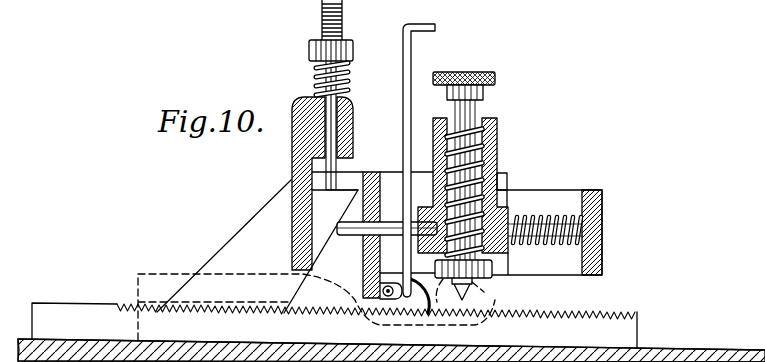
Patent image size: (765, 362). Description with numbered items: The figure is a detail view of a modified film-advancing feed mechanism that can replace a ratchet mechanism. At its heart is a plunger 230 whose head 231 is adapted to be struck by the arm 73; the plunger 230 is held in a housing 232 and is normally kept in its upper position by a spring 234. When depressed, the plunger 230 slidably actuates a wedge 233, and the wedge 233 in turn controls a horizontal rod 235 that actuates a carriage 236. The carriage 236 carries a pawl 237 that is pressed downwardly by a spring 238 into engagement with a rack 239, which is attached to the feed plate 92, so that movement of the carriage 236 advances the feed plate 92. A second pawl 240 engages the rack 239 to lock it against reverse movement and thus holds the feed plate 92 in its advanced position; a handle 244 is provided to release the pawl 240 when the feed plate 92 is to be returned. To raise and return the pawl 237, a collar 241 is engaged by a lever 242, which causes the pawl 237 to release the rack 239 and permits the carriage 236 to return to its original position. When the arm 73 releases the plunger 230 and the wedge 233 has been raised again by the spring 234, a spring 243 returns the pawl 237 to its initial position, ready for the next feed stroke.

The arm 73 is at (325, 95).
The head 231 is at (311, 47).
The spring 234 is at (346, 81).
The plunger 230 is at (351, 118).
The housing 232 is at (290, 156).
The wedge 233 is at (315, 229).
The horizontal rod 235 is at (350, 238).
The handle 244 is at (428, 18).
The spring 238 is at (496, 140).
The carriage 236 is at (493, 162).
The spring 243 is at (545, 220).
The collar 241 is at (493, 268).
The pawl 237 is at (485, 292).
The rack 239 is at (584, 309).
The lever 242 is at (503, 315).
The pawl 240 is at (417, 298).
The feed plate 92 is at (649, 356).